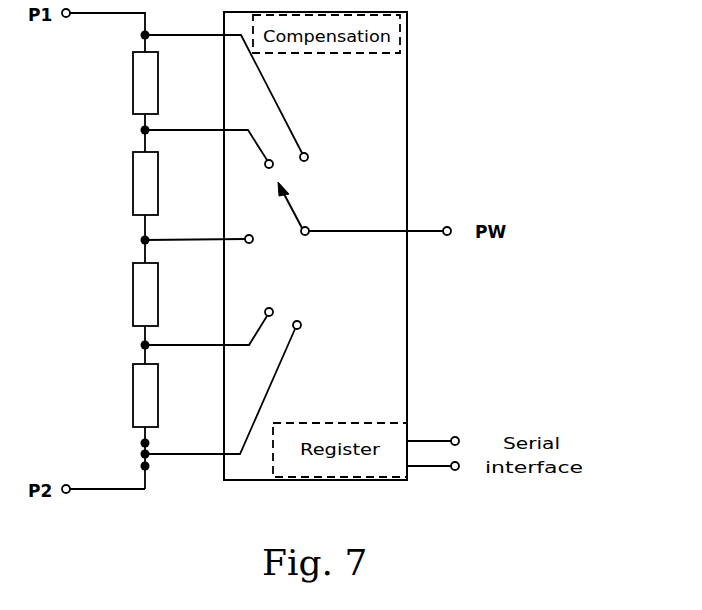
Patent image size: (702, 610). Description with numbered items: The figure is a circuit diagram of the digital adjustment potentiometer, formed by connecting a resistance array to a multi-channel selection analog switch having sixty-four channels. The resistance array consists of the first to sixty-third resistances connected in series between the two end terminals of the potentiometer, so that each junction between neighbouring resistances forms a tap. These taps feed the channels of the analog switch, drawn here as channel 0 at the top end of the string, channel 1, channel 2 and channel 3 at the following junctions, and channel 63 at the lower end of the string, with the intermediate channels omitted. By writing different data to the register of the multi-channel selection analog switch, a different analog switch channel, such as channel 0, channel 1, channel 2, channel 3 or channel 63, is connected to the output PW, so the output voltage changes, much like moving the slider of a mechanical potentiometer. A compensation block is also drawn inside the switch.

The tap 0 of resistor string (compensation path) 0 is at (226, 85).
The tap 1 of resistor string 1 is at (209, 136).
The tap 2 of resistor string 2 is at (199, 230).
The tap 3 of resistor string 3 is at (209, 326).
The tap 63 of resistor string (register path) 63 is at (223, 387).